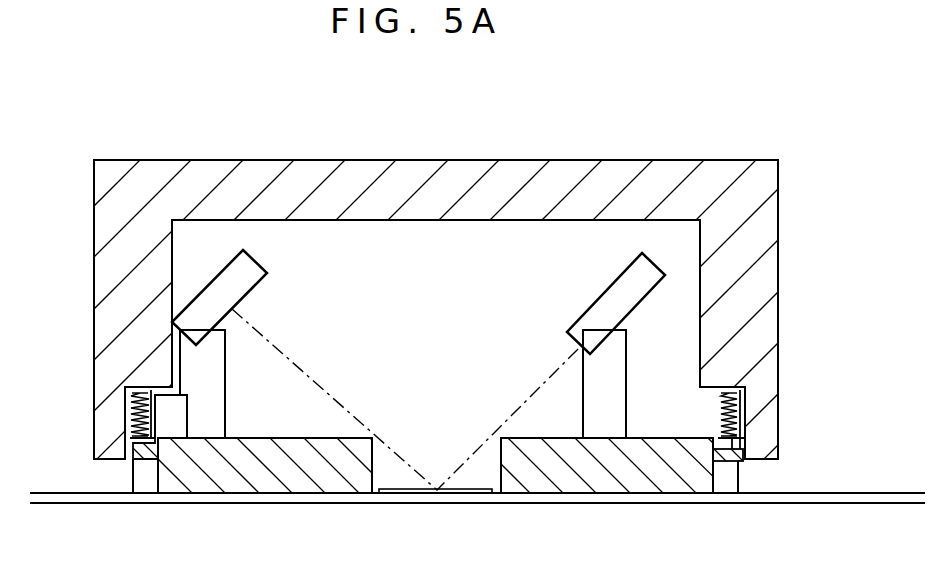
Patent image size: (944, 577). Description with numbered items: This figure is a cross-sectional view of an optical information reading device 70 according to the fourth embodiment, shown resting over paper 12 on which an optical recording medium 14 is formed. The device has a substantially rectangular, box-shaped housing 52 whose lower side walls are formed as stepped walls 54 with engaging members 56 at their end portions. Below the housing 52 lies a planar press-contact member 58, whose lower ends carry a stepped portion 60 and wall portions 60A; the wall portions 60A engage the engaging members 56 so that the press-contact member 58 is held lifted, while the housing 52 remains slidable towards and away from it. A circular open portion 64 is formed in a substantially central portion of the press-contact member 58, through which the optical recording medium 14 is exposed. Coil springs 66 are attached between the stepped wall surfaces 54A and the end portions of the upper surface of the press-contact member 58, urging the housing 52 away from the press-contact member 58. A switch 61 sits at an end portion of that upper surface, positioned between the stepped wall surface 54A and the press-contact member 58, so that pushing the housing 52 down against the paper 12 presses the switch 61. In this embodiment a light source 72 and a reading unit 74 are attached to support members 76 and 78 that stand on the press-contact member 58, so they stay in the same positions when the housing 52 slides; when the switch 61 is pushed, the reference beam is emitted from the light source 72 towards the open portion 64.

The optical scanning device 70 is at (810, 84).
The housing 52 is at (771, 264).
The paper 12 is at (822, 504).
The press-contact member 58 is at (266, 487).
The open portion 64 is at (500, 473).
The optical recording medium 14 is at (418, 496).
The support member 78 is at (225, 357).
The stepped wall surface 54A is at (166, 397).
The switch 61 is at (182, 423).
The reading unit 74 is at (246, 280).
The light source 72 is at (640, 286).
The support member 76 is at (626, 362).
The stepped wall 54 is at (125, 392).
The coil spring 66 is at (130, 418).
The wall portion 60A is at (130, 446).
The stepped portion 60 is at (139, 493).
The engaging member 56 is at (133, 472).